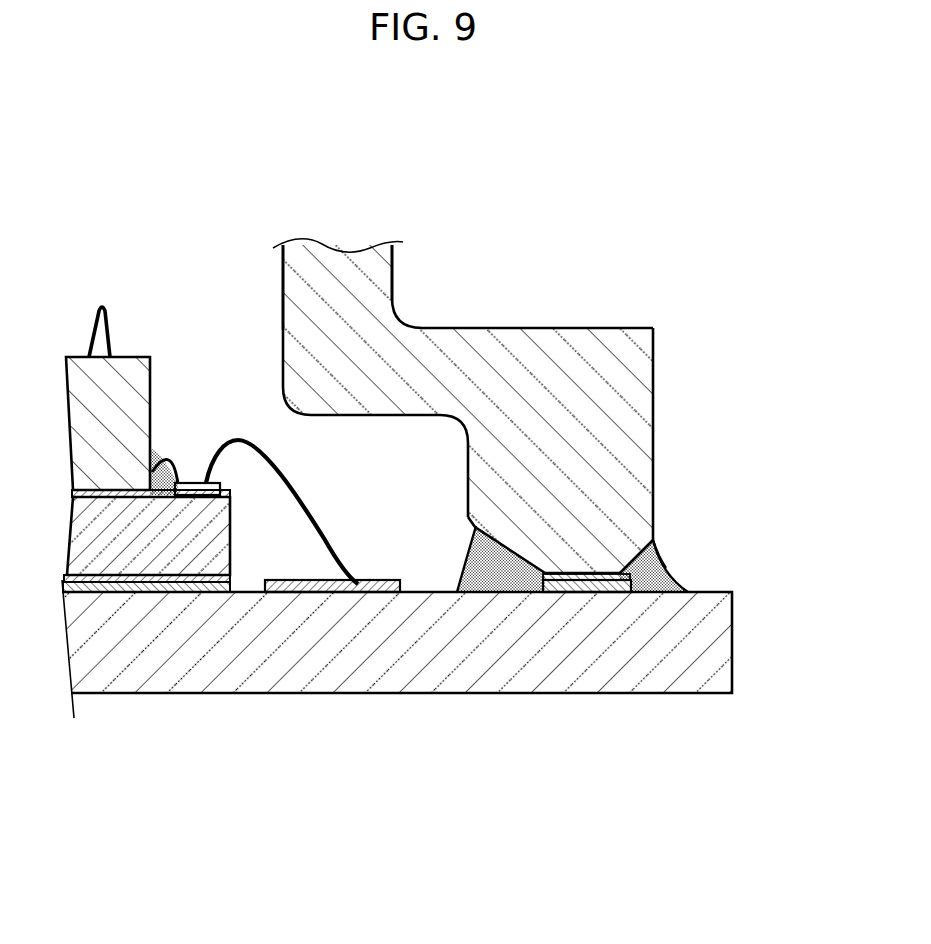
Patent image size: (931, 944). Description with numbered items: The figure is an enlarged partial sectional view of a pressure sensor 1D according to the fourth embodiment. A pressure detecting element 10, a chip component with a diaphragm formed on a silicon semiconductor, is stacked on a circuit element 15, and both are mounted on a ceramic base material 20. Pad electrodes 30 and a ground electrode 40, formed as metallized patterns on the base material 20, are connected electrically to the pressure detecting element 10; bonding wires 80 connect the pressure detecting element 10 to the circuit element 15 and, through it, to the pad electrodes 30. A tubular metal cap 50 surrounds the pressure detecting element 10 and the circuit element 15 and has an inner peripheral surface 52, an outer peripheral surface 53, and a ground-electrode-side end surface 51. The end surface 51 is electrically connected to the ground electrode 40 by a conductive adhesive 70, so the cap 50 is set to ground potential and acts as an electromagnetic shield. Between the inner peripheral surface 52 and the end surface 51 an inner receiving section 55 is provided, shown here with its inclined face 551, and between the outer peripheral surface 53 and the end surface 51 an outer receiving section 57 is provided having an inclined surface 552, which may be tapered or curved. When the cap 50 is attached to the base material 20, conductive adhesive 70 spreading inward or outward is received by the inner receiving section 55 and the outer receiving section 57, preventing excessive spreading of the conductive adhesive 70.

The pressure sensor 1D is at (541, 184).
The pressure detecting element 10 is at (130, 374).
The circuit element 15 is at (140, 595).
The base material 20 is at (716, 623).
The pad electrode 30 is at (305, 595).
The ground electrode 40 is at (595, 597).
The cap 50 is at (558, 357).
The ground-electrode-side end surface 51 is at (650, 597).
The inner peripheral surface 52 is at (282, 317).
The outer peripheral surface 53 is at (657, 413).
The inner receiving section 55 is at (510, 567).
The outer receiving section 57 is at (658, 577).
The conductive adhesive 70 is at (663, 563).
The bonding wire 80 is at (98, 303).
The inclined inner surface of leg 551 is at (505, 540).
The inclined surface 552 is at (660, 556).